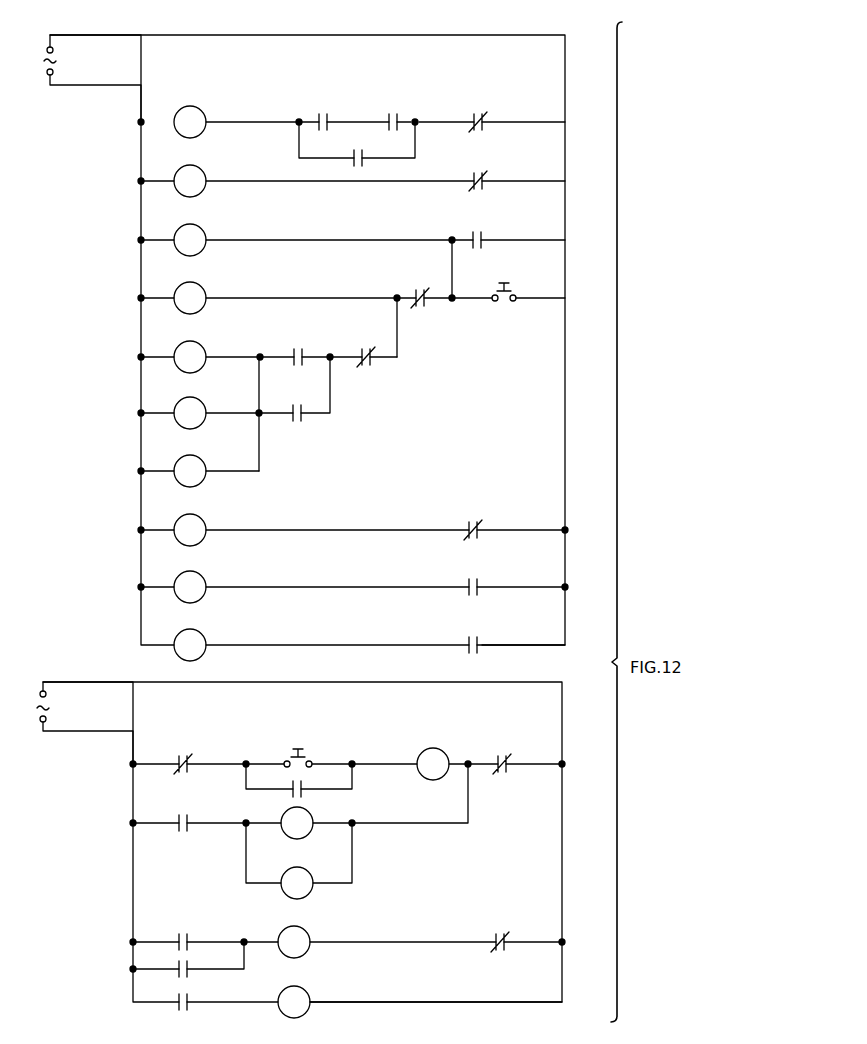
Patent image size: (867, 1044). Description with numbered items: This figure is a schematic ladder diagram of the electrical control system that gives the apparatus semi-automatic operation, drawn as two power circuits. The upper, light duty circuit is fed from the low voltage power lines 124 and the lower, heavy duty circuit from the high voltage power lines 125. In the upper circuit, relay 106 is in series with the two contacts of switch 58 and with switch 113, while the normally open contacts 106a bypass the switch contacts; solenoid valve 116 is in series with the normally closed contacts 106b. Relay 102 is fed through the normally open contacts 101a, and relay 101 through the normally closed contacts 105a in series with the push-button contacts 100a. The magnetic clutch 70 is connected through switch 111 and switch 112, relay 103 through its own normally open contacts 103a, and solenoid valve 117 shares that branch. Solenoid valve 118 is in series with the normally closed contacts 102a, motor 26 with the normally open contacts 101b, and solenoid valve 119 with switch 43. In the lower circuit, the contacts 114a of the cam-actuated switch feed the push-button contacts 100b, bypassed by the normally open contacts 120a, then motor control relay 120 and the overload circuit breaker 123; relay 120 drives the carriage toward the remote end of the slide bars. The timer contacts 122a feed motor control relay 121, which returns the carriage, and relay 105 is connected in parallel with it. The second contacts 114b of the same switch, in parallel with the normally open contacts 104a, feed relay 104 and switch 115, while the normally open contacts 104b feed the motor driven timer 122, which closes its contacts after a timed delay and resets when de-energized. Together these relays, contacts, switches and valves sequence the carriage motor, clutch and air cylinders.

The low voltage power lines 124 is at (85, 37).
The high voltage power lines 125 is at (78, 684).
The control relay 106 is at (198, 111).
The electrical switch 58 is at (391, 111).
The electrical switch 113 is at (475, 111).
The normally open contacts 106a is at (367, 160).
The solenoid valve 116 is at (198, 171).
The normally closed contacts 106b is at (483, 190).
The control relay 102 is at (198, 229).
The normally open contacts 101a is at (482, 238).
The control relay 101 is at (198, 288).
The normally closed contacts 105a is at (414, 291).
The normally open contacts 100a is at (500, 303).
The magnetic clutch 70 is at (198, 349).
The electrical switch 111 is at (293, 347).
The electrical switch 112 is at (358, 347).
The control relay 103 is at (197, 405).
The normally open contacts 103a is at (302, 421).
The solenoid valve 117 is at (197, 463).
The solenoid valve 118 is at (195, 522).
The normally closed contacts 102a is at (466, 521).
The motor 26 is at (195, 579).
The normally open contacts 101b is at (466, 578).
The solenoid valve 119 is at (195, 637).
The electrical switch 43 is at (466, 636).
The contacts of switch 114 114a is at (186, 752).
The normally open contacts 100b is at (308, 752).
The normally open contacts 120a is at (304, 794).
The motor control relay 120 is at (431, 749).
The overload circuit breaker 123 is at (496, 751).
The normally open contacts 122a is at (186, 817).
The motor control relay 121 is at (284, 815).
The control relay 105 is at (291, 899).
The contacts of switch 114 114b is at (186, 936).
The control relay 104 is at (292, 935).
The electrical switch 115 is at (491, 938).
The normally open contacts 104a is at (187, 976).
The normally open contacts 104b is at (187, 1011).
The motor driven timer 122 is at (308, 1009).